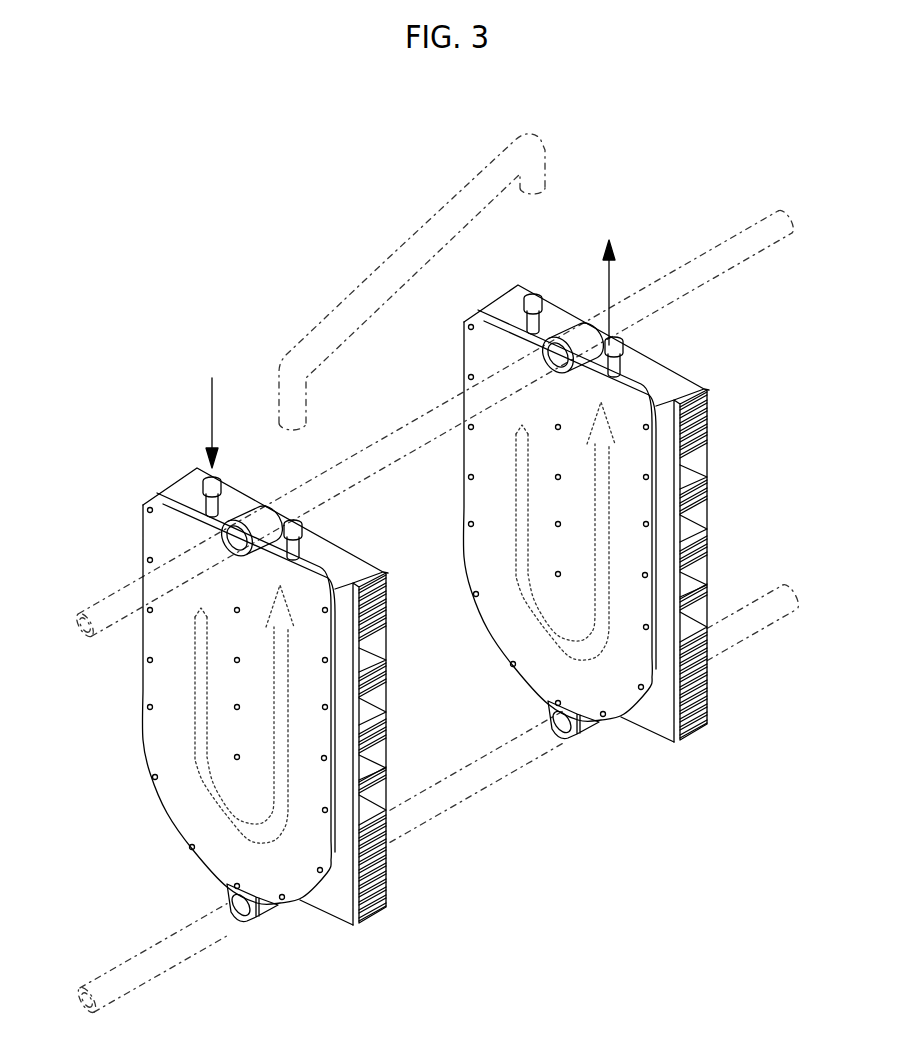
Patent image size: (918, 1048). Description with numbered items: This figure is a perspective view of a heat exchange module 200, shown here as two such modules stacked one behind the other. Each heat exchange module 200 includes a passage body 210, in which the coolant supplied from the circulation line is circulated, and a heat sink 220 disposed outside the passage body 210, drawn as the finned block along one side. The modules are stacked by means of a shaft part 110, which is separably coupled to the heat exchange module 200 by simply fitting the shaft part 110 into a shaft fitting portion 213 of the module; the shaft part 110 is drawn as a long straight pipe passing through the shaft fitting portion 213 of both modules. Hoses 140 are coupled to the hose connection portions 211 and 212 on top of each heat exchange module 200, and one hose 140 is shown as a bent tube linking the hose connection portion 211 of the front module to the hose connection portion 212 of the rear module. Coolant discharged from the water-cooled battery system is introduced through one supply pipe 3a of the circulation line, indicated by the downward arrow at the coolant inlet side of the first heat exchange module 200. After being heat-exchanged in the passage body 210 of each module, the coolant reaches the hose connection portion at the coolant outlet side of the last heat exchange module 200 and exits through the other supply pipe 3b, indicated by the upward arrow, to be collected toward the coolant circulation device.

The shaft part 110 is at (77, 644).
The hose 140 is at (382, 262).
The heat exchange module 200 is at (322, 729).
The passage body 210 is at (294, 904).
The hose connection portion 211 is at (303, 515).
The hose connection portion 212 is at (534, 294).
The shaft fitting portion 213 is at (256, 503).
The heat sink 220 is at (392, 882).
The supply pipe 3a is at (205, 400).
The supply pipe 3b is at (615, 270).